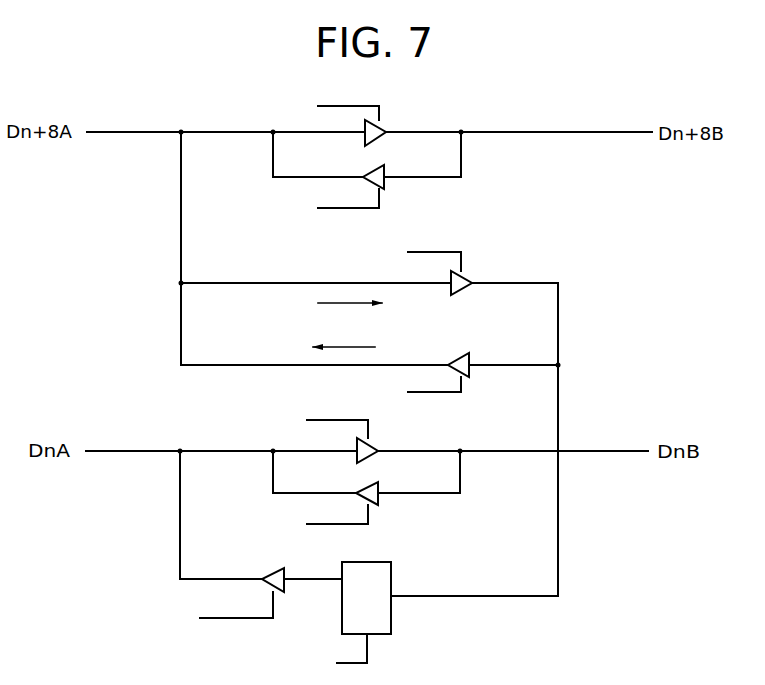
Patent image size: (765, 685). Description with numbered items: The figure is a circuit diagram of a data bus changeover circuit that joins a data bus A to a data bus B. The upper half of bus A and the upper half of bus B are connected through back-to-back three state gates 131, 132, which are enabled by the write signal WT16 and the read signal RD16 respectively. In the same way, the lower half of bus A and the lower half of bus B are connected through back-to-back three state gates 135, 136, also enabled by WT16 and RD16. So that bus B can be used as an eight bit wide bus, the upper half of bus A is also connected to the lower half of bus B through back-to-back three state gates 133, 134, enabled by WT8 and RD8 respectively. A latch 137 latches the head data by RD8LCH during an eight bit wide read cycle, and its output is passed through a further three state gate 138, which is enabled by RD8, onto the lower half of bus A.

The three state gate 131 is at (383, 127).
The three state gate 132 is at (398, 150).
The three state gate 133 is at (470, 279).
The three state gate 134 is at (470, 354).
The three state gate 135 is at (376, 445).
The three state gate 136 is at (379, 483).
The latch 137 is at (392, 580).
The three state gate 138 is at (297, 549).